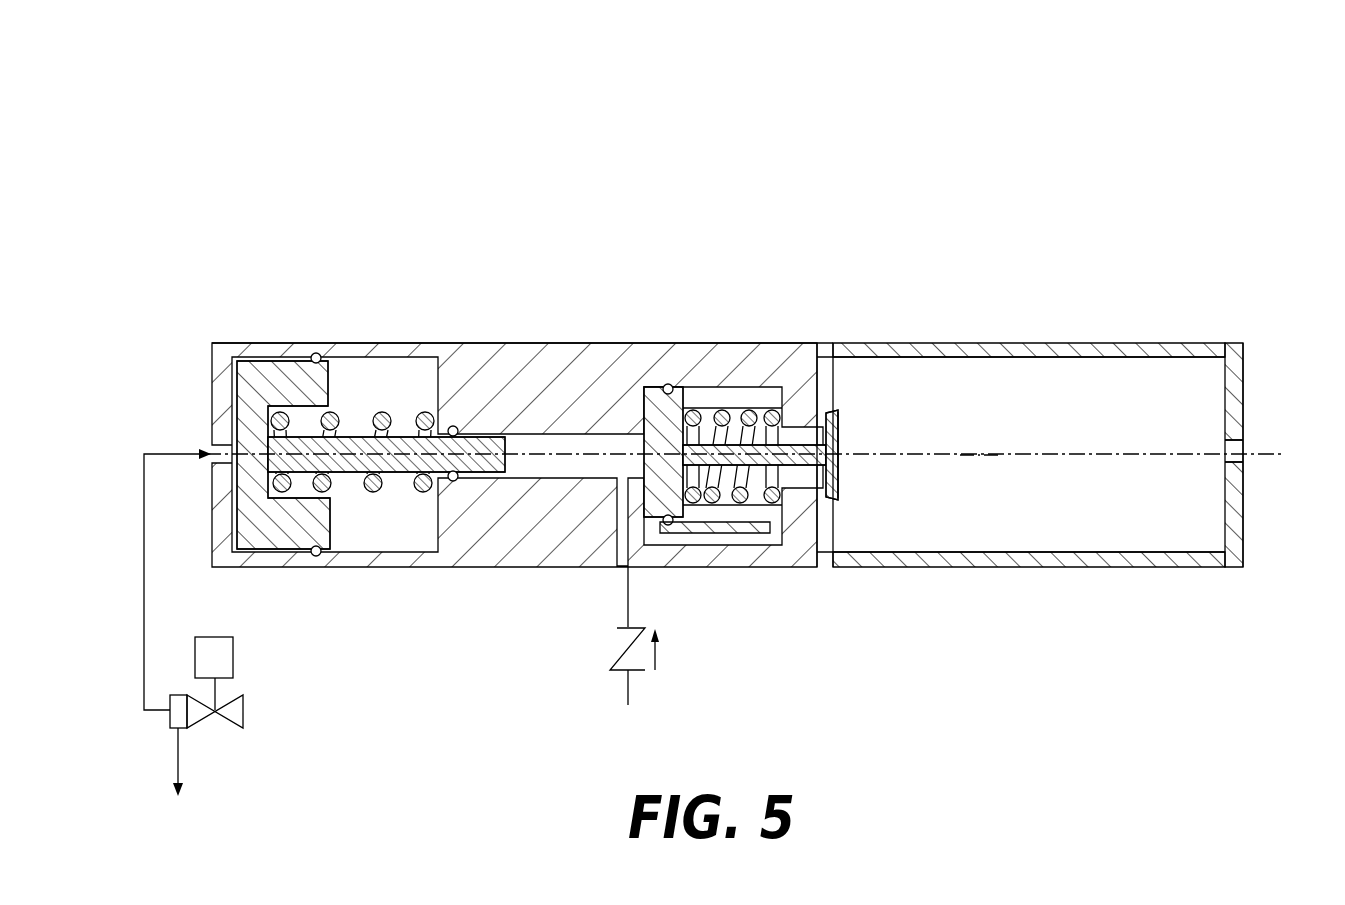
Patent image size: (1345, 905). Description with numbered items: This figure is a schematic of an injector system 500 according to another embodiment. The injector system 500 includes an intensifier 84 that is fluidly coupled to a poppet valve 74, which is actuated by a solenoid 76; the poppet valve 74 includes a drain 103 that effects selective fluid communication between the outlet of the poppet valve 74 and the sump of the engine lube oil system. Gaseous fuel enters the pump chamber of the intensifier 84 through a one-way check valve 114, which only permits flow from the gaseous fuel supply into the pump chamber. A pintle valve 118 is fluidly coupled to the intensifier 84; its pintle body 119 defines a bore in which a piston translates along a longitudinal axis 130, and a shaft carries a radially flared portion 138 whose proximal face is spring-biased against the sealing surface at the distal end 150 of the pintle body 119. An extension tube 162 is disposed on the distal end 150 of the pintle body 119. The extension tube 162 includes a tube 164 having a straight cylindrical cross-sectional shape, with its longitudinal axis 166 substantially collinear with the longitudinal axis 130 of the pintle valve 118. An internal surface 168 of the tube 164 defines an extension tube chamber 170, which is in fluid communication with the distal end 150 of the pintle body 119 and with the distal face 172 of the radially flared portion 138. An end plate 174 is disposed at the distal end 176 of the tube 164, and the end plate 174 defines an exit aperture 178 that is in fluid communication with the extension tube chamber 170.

The injector system 500 is at (394, 131).
The intensifier 84 is at (640, 322).
The pintle valve 118 is at (833, 322).
The pintle body 119 is at (781, 567).
The one-way check valve 114 is at (615, 628).
The longitudinal axis 130 is at (870, 455).
The radially flared portion 138 is at (838, 418).
The distal face 172 is at (840, 437).
The distal end 150 is at (835, 533).
The extension tube 162 is at (1243, 227).
The tube 164 is at (1045, 567).
The longitudinal axis 166 is at (980, 455).
The internal surface 168 is at (1100, 552).
The extension tube chamber 170 is at (1069, 424).
The end plate 174 is at (1244, 504).
The distal end 176 is at (1236, 338).
The exit aperture 178 is at (1243, 456).
The drain 103 is at (178, 761).
The poppet valve 74 is at (236, 727).
The solenoid 76 is at (235, 651).